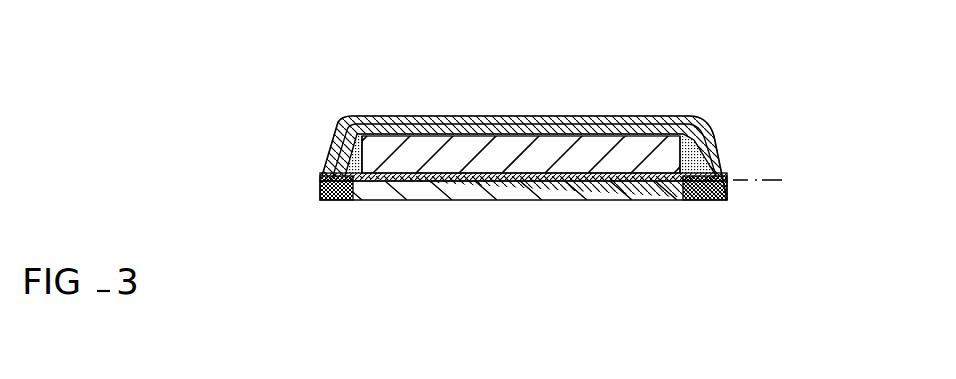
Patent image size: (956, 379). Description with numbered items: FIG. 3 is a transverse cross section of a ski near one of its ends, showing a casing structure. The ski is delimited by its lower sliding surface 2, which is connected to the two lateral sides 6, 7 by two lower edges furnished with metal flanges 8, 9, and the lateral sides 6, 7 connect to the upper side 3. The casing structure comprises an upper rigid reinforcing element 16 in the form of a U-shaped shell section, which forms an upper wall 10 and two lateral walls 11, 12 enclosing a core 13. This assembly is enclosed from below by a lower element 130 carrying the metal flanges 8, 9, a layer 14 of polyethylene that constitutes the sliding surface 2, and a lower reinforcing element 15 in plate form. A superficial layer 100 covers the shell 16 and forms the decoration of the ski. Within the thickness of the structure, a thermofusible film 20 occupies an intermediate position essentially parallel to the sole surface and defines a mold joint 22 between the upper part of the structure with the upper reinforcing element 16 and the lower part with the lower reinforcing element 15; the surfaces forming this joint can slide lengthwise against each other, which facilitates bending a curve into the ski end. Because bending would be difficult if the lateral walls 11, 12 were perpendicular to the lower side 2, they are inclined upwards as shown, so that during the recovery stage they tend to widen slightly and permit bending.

The lower sliding surface 2 is at (407, 206).
The upper side 3 is at (488, 114).
The lateral side 6 is at (331, 128).
The lateral side 7 is at (731, 161).
The metal flange 8 is at (320, 195).
The metal flange 9 is at (727, 195).
The upper wall 10 is at (563, 114).
The lateral wall 11 is at (324, 143).
The lateral wall 12 is at (717, 138).
The core 13 is at (438, 153).
The layer of polyethylene 14 is at (662, 197).
The lower reinforcing element 15 is at (455, 188).
The upper rigid reinforcing element 16 is at (396, 116).
The thermofusible film 20 is at (623, 188).
The mold joint 22 is at (768, 180).
The superficial layer 100 is at (638, 121).
The lower element 130 is at (553, 206).